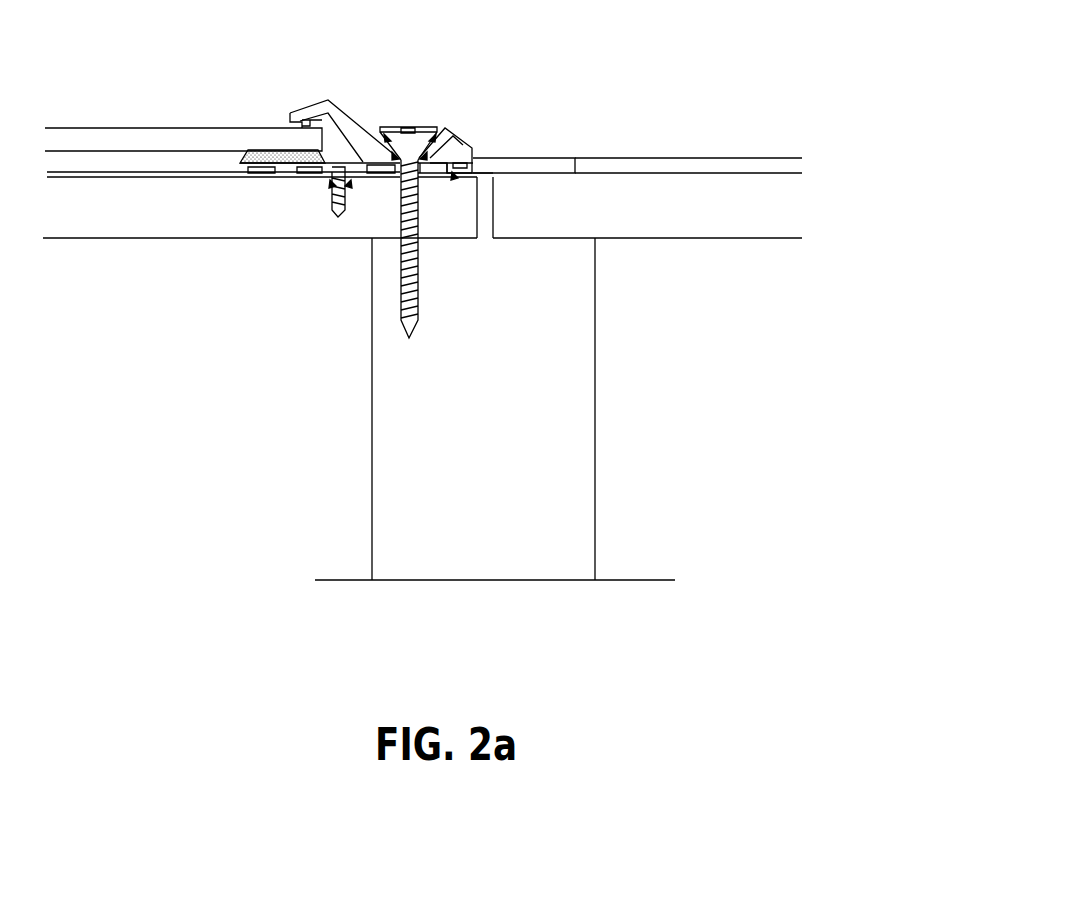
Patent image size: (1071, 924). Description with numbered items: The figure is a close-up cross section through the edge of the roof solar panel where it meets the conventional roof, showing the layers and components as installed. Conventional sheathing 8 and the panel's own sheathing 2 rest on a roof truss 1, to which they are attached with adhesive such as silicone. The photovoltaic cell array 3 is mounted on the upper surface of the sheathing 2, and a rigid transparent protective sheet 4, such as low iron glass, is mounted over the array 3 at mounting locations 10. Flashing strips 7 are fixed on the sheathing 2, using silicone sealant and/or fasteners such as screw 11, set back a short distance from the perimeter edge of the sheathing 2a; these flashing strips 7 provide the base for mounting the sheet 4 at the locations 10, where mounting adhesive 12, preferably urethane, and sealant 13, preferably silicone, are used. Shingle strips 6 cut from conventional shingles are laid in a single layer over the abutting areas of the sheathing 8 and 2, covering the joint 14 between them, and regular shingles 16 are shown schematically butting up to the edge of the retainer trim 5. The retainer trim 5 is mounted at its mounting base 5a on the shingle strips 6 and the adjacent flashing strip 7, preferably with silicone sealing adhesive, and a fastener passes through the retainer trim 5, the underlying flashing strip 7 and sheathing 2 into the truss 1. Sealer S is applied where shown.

The roof truss 1 is at (560, 428).
The sheathing 2 is at (107, 220).
The perimeter edge of the sheathing 2a is at (480, 172).
The photovoltaic cell array 3 is at (60, 172).
The rigid transparent protective sheet 4 is at (142, 138).
The retainer trim 5 is at (345, 110).
The mounting base 5a is at (328, 100).
The shingle strip 6 is at (510, 160).
The flashing strip 7 is at (286, 174).
The sheathing 8 is at (677, 222).
The mounting location 10 is at (249, 108).
The screw 11 is at (330, 183).
The mounting adhesive 12 is at (240, 158).
The sealant 13 is at (290, 122).
The joint 14 is at (493, 240).
The regular shingles 16 is at (593, 158).
The sealer S is at (386, 136).